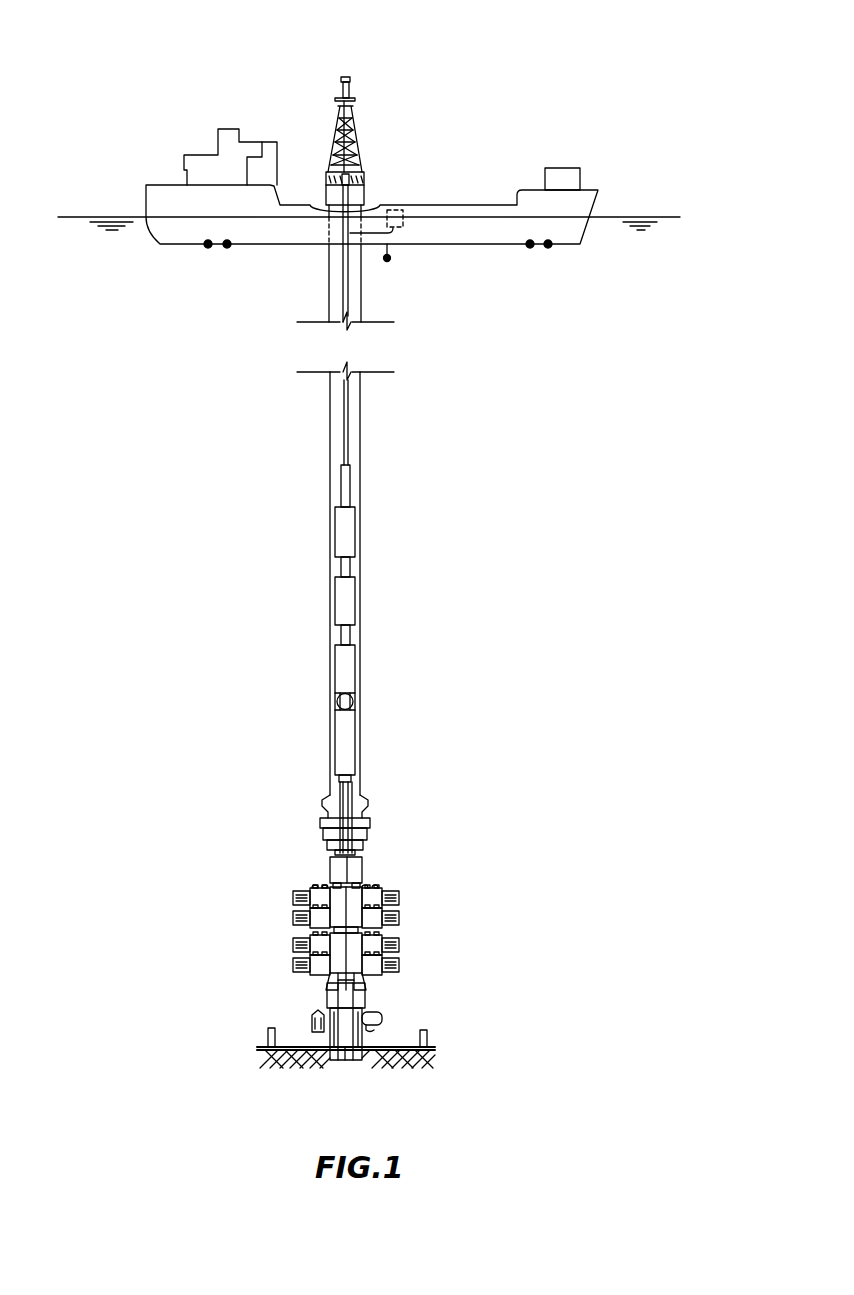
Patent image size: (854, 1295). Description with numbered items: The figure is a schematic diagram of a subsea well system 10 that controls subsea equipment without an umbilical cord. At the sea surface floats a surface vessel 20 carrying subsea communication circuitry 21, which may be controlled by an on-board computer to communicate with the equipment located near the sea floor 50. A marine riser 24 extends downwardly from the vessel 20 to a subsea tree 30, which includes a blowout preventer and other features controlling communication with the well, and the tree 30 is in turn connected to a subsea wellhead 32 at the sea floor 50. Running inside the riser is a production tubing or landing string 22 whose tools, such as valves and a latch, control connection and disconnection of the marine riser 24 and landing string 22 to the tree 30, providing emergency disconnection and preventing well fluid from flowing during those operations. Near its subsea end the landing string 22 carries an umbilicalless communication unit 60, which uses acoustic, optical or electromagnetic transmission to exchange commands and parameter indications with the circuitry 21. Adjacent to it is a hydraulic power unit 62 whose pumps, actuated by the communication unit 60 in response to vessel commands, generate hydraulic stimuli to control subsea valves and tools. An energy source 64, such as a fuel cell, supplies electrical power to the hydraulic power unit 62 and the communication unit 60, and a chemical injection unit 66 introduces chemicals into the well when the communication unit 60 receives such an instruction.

The subsea well system 10 is at (468, 44).
The surface vessel 20 is at (448, 244).
The subsea communication circuitry 21 is at (398, 210).
The landing string 22 is at (342, 293).
The marine riser 24 is at (330, 448).
The subsea tree 30 is at (422, 930).
The subsea wellhead 32 is at (398, 1003).
The sea floor 50 is at (430, 1052).
The umbilicalless communication unit 60 is at (355, 528).
The hydraulic power unit 62 is at (355, 594).
The energy source 64 is at (355, 661).
The chemical injection unit 66 is at (355, 732).